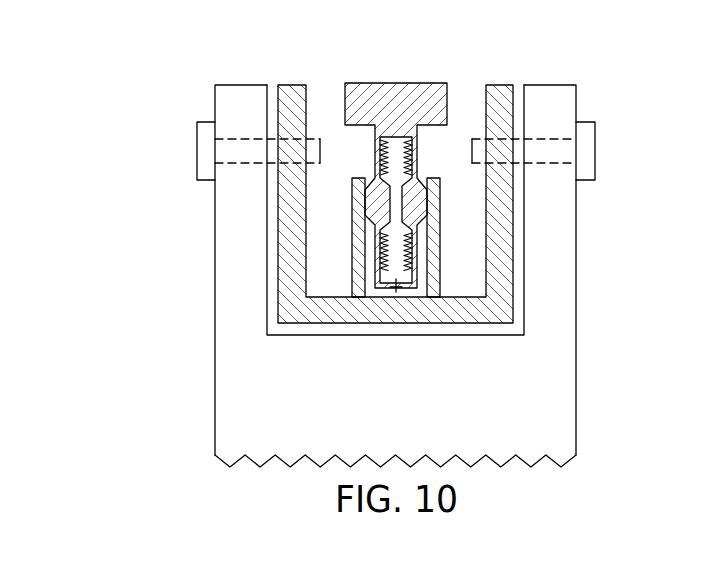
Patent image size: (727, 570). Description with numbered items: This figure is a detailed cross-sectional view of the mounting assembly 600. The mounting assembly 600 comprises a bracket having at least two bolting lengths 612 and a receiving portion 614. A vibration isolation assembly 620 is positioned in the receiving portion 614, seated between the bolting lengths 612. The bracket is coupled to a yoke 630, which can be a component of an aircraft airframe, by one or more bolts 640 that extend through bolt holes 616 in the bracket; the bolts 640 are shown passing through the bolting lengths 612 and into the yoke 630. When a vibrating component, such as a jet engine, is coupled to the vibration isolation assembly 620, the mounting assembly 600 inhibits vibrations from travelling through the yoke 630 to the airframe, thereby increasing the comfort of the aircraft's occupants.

The mounting assembly 600 is at (156, 99).
The bolting lengths 612 is at (292, 87).
The receiving portion 614 is at (350, 168).
The bolt holes 616 is at (278, 138).
The vibration isolation assembly 620 is at (390, 58).
The yoke 630 is at (576, 402).
The bolts 640 is at (199, 163).